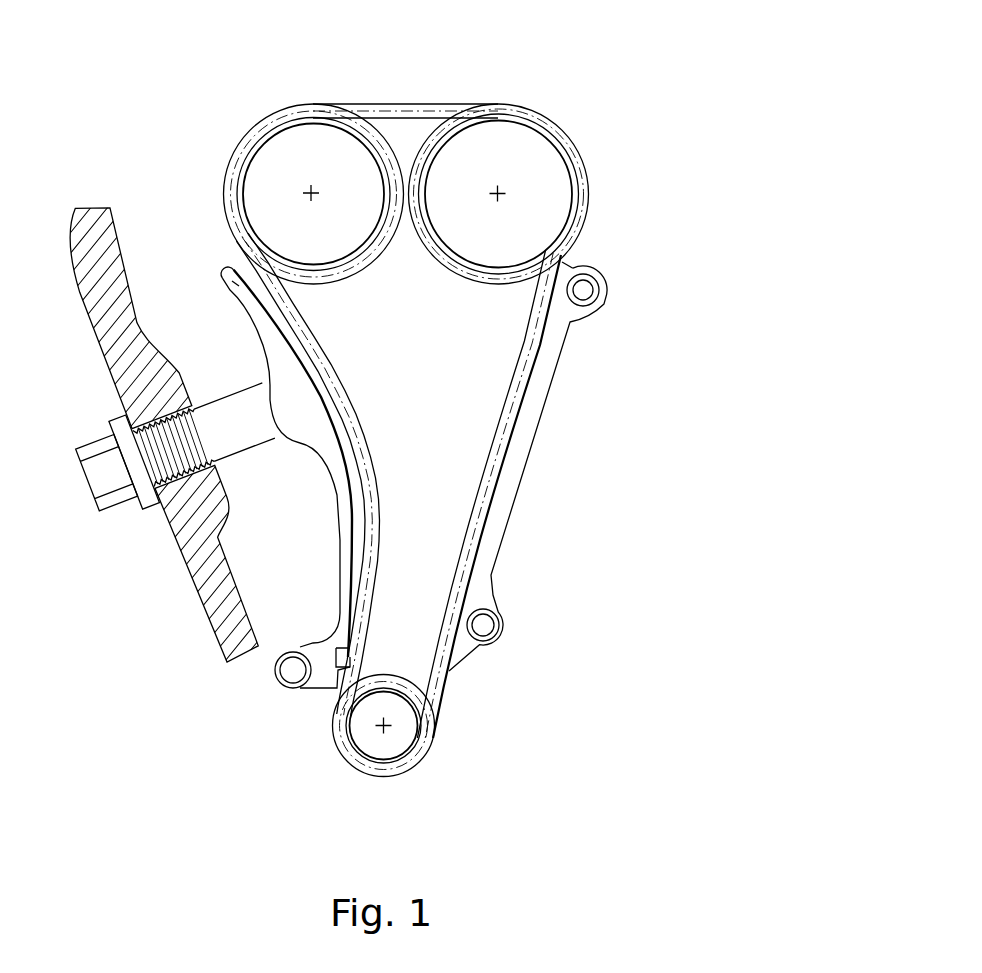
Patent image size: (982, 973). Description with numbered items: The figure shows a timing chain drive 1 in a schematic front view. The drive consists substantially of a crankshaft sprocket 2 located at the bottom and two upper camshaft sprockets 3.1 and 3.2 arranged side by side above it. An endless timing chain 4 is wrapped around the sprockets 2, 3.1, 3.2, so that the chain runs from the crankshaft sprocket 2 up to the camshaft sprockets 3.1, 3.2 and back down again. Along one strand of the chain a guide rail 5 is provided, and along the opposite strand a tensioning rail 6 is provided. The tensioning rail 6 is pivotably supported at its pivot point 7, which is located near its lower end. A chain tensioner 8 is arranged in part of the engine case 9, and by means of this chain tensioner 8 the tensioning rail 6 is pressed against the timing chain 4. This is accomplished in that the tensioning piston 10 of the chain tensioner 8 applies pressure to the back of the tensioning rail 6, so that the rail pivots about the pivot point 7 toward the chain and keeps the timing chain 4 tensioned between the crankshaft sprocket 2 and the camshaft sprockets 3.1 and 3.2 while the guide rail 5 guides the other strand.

The timing chain drive 1 is at (584, 80).
The crankshaft sprocket 2 is at (400, 740).
The upper camshaft sprocket 3.1 is at (282, 143).
The upper camshaft sprocket 3.2 is at (556, 168).
The endless timing chain 4 is at (410, 92).
The guide rail 5 is at (531, 447).
The tensioning rail 6 is at (328, 578).
The pivot point 7 is at (292, 676).
The chain tensioner 8 is at (117, 528).
The engine case 9 is at (93, 299).
The tensioning piston 10 is at (279, 445).